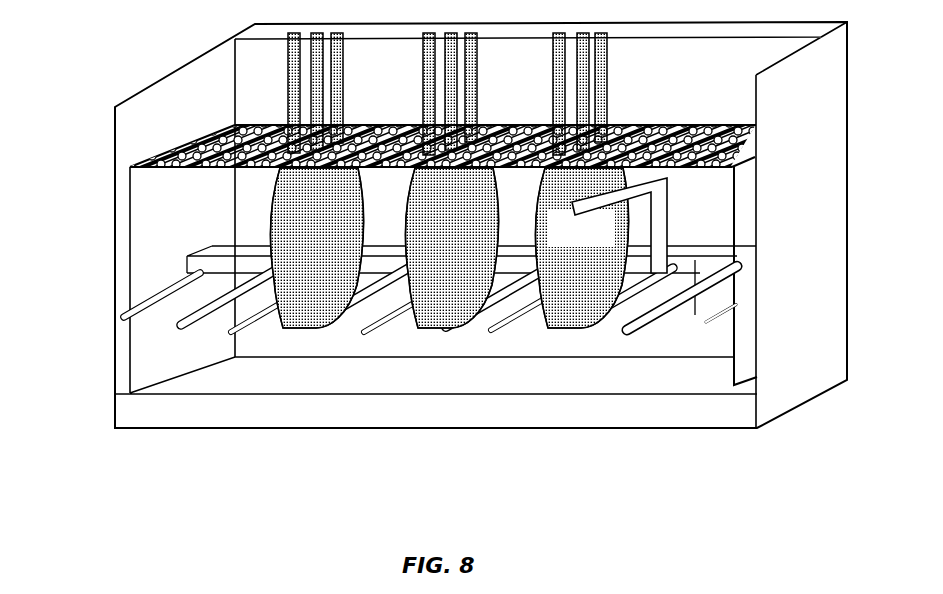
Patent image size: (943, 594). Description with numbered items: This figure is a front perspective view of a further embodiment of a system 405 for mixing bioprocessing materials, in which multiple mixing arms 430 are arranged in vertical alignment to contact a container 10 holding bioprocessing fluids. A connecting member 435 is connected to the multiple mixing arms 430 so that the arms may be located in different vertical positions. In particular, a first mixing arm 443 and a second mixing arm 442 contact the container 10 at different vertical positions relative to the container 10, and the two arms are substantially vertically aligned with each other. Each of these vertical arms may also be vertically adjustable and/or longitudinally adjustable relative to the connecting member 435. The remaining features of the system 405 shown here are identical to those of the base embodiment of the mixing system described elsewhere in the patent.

The system for mixing bioprocessing materials 405 is at (113, 488).
The connecting member 435 is at (704, 259).
The mixing arms 430 is at (705, 326).
The second mixing arm 442 is at (577, 324).
The container 10 is at (550, 323).
The first mixing arm 443 is at (574, 210).